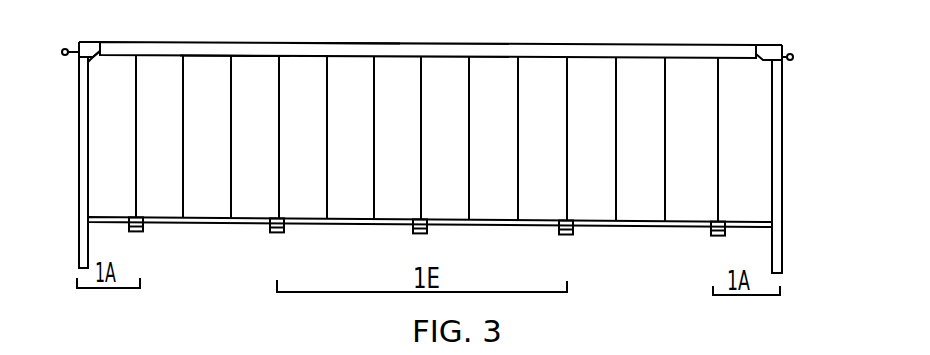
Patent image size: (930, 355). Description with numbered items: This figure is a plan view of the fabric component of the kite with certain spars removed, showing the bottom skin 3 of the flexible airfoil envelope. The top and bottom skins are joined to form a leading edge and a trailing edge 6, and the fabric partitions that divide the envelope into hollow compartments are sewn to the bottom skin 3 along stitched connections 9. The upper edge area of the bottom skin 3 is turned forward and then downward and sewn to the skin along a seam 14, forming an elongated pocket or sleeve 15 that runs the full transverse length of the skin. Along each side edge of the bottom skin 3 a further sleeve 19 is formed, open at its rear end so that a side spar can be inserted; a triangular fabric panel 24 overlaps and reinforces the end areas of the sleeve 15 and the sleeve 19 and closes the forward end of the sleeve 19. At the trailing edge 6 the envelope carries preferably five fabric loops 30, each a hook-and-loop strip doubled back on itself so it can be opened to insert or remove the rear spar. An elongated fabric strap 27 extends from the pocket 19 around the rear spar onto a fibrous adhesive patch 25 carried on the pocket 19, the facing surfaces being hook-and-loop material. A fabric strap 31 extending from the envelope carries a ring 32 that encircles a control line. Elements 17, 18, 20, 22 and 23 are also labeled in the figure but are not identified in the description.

The bottom skin 3 is at (241, 190).
The trailing edge 6 is at (360, 223).
The stitched connections 9 is at (566, 197).
The sewn seam 14 is at (78, 42).
The sleeve 15 is at (160, 46).
The top rail lower flange 17 is at (222, 46).
The top rail upper flange 18 is at (284, 46).
The side sleeve 19 is at (778, 110).
The corner gusset 20 is at (80, 59).
The left post 22 is at (79, 151).
The post sleeve 23 is at (86, 107).
The triangular fabric panel 24 is at (89, 43).
The fibrous adhesive patch 25 is at (775, 208).
The fabric strap 27 is at (80, 240).
The fabric loop 30 is at (143, 230).
The fabric strap 31 is at (786, 46).
The ring 32 is at (790, 61).